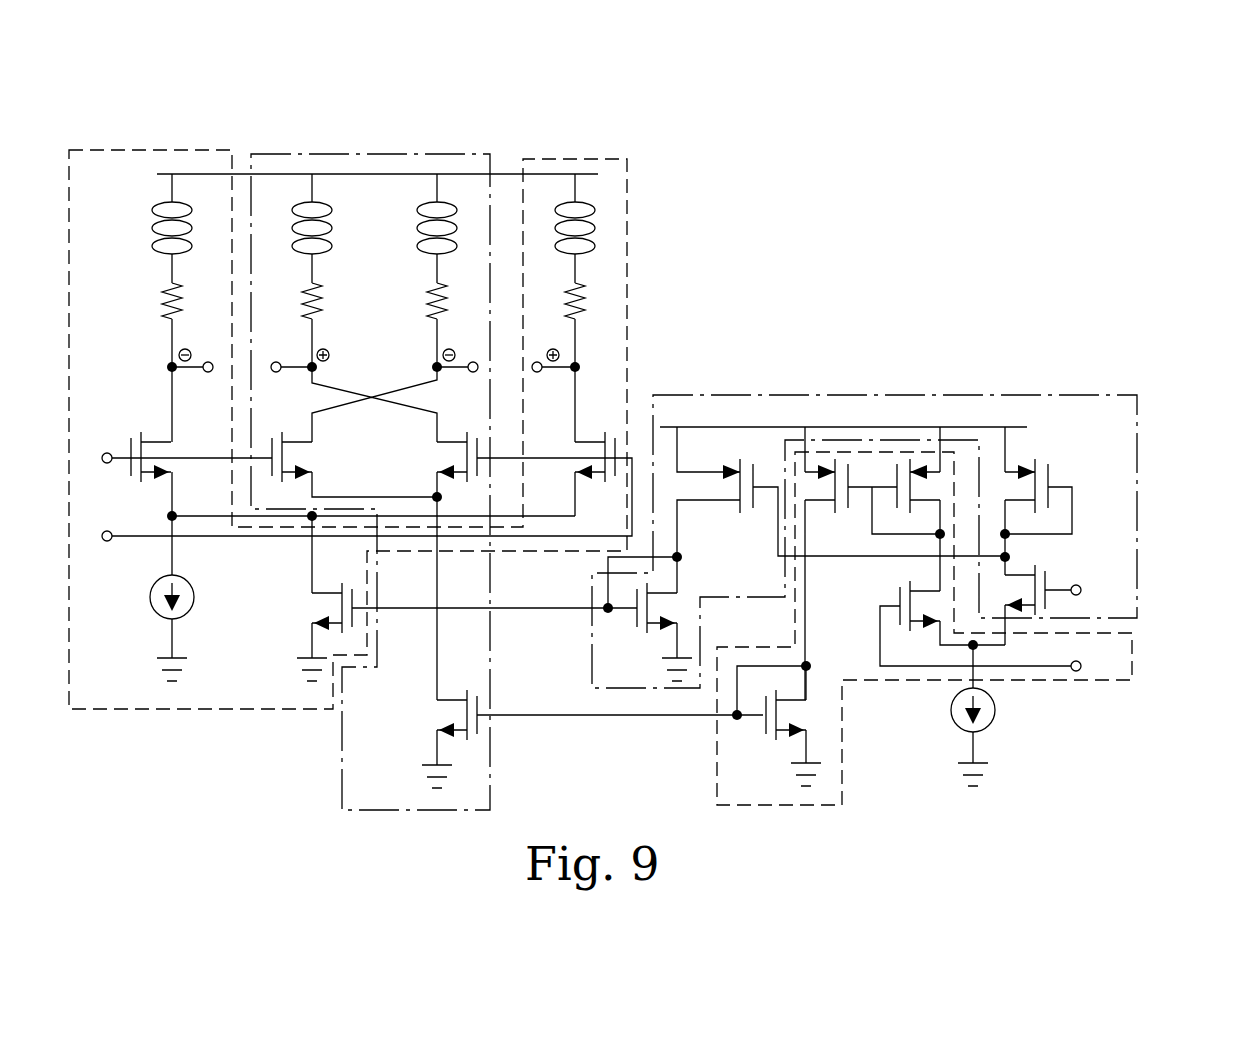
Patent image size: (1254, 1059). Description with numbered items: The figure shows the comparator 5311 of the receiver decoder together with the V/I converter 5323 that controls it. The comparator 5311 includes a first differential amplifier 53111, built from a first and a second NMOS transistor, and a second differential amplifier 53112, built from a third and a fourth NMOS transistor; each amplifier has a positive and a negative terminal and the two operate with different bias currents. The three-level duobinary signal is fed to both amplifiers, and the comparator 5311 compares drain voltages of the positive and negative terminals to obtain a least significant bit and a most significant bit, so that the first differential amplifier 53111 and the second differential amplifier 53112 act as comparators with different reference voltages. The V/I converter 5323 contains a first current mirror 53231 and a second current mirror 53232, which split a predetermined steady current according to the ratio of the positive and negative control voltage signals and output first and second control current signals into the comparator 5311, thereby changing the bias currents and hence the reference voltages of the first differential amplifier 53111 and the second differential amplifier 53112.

The comparator 5311 is at (555, 82).
The first differential amplifier 53111 is at (567, 158).
The second differential amplifier 53112 is at (343, 153).
The V/I converter 5323 is at (1152, 450).
The first current mirror 53231 is at (840, 394).
The second current mirror 53232 is at (843, 718).